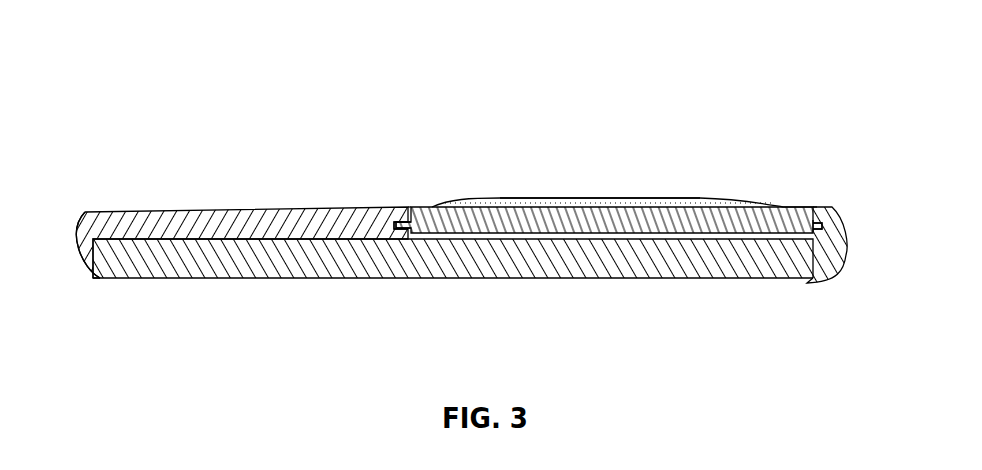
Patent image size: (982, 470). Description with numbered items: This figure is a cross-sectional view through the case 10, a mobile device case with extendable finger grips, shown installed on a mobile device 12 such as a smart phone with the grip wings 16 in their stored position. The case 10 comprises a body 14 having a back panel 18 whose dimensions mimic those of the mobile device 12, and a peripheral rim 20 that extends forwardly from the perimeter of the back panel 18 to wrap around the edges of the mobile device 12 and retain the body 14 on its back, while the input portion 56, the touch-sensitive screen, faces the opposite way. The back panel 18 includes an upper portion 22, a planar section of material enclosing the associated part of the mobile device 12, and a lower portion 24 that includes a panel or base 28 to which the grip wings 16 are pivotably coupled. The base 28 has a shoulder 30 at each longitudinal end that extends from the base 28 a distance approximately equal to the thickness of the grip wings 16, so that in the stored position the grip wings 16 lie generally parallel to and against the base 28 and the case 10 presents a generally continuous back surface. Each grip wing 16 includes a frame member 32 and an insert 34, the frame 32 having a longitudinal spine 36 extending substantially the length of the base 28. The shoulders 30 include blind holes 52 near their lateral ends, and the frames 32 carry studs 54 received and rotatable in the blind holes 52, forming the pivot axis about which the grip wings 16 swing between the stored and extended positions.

The case 10 is at (197, 56).
The mobile device 12 is at (490, 270).
The body 14 is at (88, 212).
The grip wings 16 is at (420, 208).
The back panel 18 is at (305, 208).
The peripheral rim 20 is at (92, 276).
The upper portion 22 is at (198, 170).
The lower portion 24 is at (625, 124).
The base 28 is at (650, 240).
The shoulder 30 is at (408, 207).
The frame member 32 is at (797, 207).
The insert 34 is at (722, 200).
The spine 36 is at (590, 207).
The blind hole 52 is at (373, 207).
The stud 54 is at (396, 232).
The input portion 56 is at (560, 290).